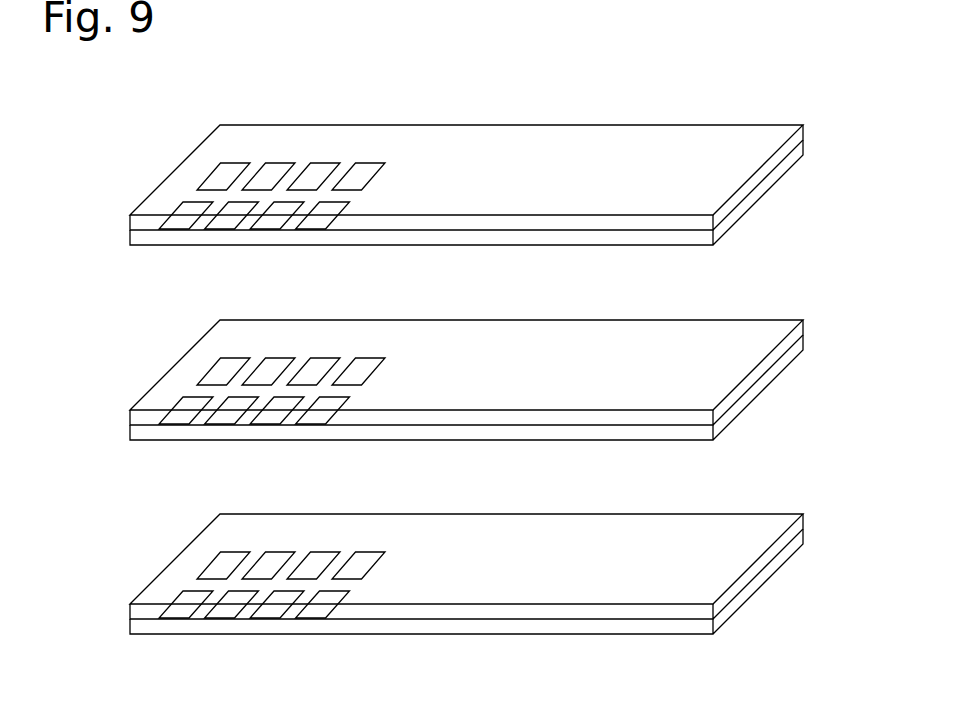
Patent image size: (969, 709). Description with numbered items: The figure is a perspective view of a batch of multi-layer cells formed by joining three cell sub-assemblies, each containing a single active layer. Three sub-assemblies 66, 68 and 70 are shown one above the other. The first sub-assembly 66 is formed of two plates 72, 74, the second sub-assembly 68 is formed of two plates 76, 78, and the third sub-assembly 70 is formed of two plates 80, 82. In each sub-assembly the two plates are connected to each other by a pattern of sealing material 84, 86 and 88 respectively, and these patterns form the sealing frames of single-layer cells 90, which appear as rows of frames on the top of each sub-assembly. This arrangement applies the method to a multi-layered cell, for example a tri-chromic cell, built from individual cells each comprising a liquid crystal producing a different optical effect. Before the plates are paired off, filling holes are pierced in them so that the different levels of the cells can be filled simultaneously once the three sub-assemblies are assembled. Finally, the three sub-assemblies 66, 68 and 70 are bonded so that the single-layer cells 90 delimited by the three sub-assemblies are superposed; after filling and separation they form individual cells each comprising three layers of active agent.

The sub-assembly 66 is at (483, 183).
The sub-assembly 68 is at (483, 378).
The sub-assembly 70 is at (483, 572).
The plate 72 is at (130, 227).
The plate 74 is at (130, 236).
The plate 76 is at (435, 372).
The plate 78 is at (435, 398).
The plate 80 is at (435, 566).
The plate 82 is at (435, 592).
The pattern of sealing material 84 is at (211, 207).
The pattern of sealing material 86 is at (254, 441).
The pattern of sealing material 88 is at (254, 635).
The single-layer cells 90 is at (322, 170).